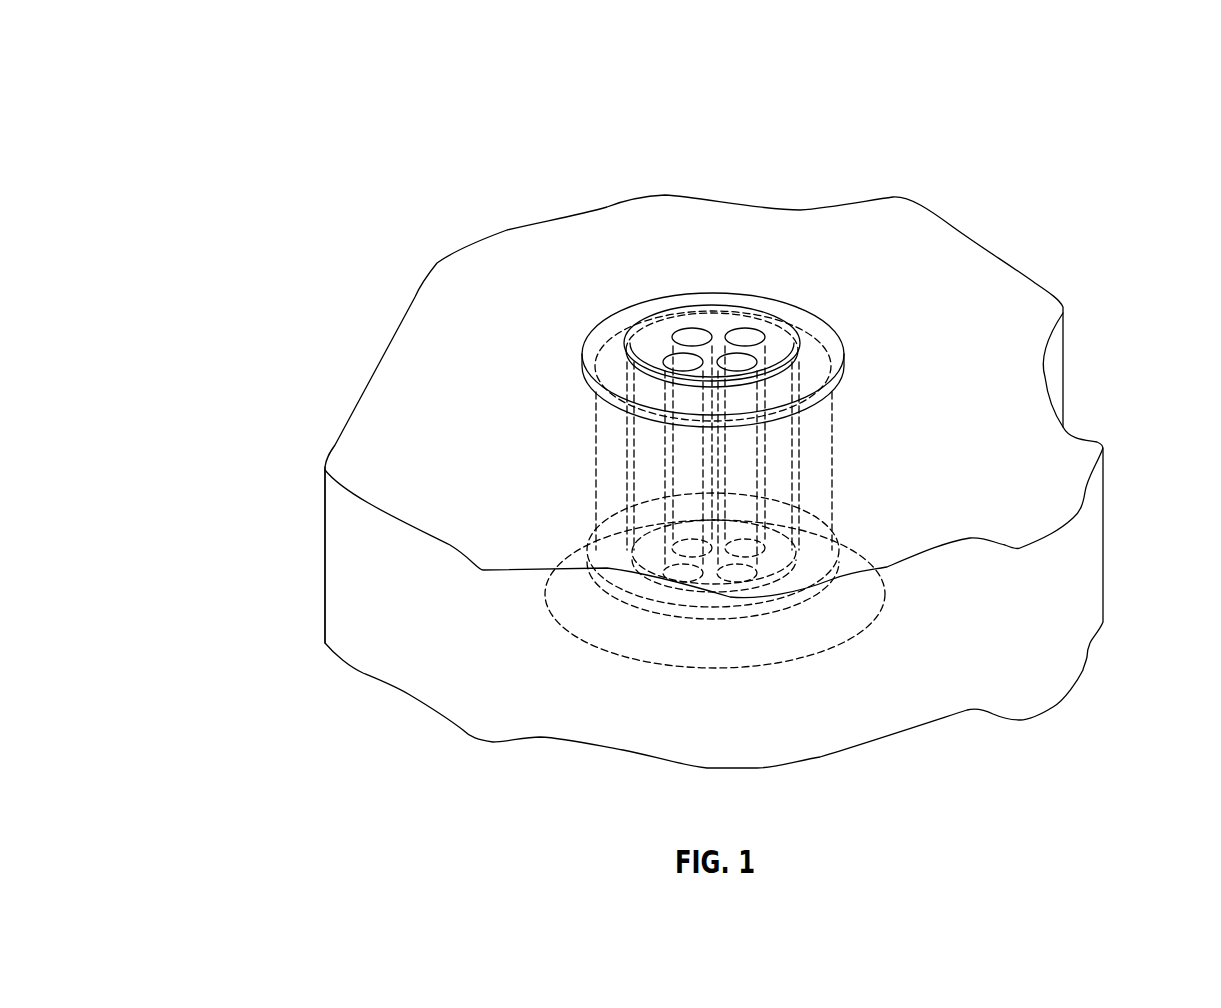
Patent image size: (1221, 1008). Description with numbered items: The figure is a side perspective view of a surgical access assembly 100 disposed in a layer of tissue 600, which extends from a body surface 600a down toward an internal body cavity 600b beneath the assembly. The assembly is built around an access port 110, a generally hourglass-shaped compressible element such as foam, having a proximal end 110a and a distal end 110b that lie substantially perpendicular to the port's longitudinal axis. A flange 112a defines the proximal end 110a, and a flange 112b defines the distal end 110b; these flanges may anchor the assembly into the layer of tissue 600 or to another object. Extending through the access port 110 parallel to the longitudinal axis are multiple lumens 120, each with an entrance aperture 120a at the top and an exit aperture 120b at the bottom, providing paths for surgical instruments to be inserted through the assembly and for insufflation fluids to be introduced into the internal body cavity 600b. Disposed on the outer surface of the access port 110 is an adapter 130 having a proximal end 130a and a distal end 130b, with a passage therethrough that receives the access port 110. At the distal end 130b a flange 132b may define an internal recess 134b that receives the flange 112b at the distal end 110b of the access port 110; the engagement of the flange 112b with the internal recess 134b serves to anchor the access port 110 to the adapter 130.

The surgical access assembly 100 is at (453, 83).
The access port 110 is at (620, 453).
The proximal end 110a is at (777, 338).
The distal end 110b is at (640, 575).
The flange 112a is at (633, 358).
The flange 112b is at (630, 563).
The lumens 120 is at (757, 438).
The entrance apertures 120a is at (688, 333).
The exit apertures 120b is at (737, 585).
The adapter 130 is at (840, 412).
The proximal end 130a is at (827, 347).
The distal end 130b is at (870, 615).
The flange 132b is at (600, 617).
The internal recess 134b is at (608, 556).
The layer of tissue 600 is at (323, 570).
The body surface 600a is at (368, 462).
The internal body cavity 600b is at (265, 840).